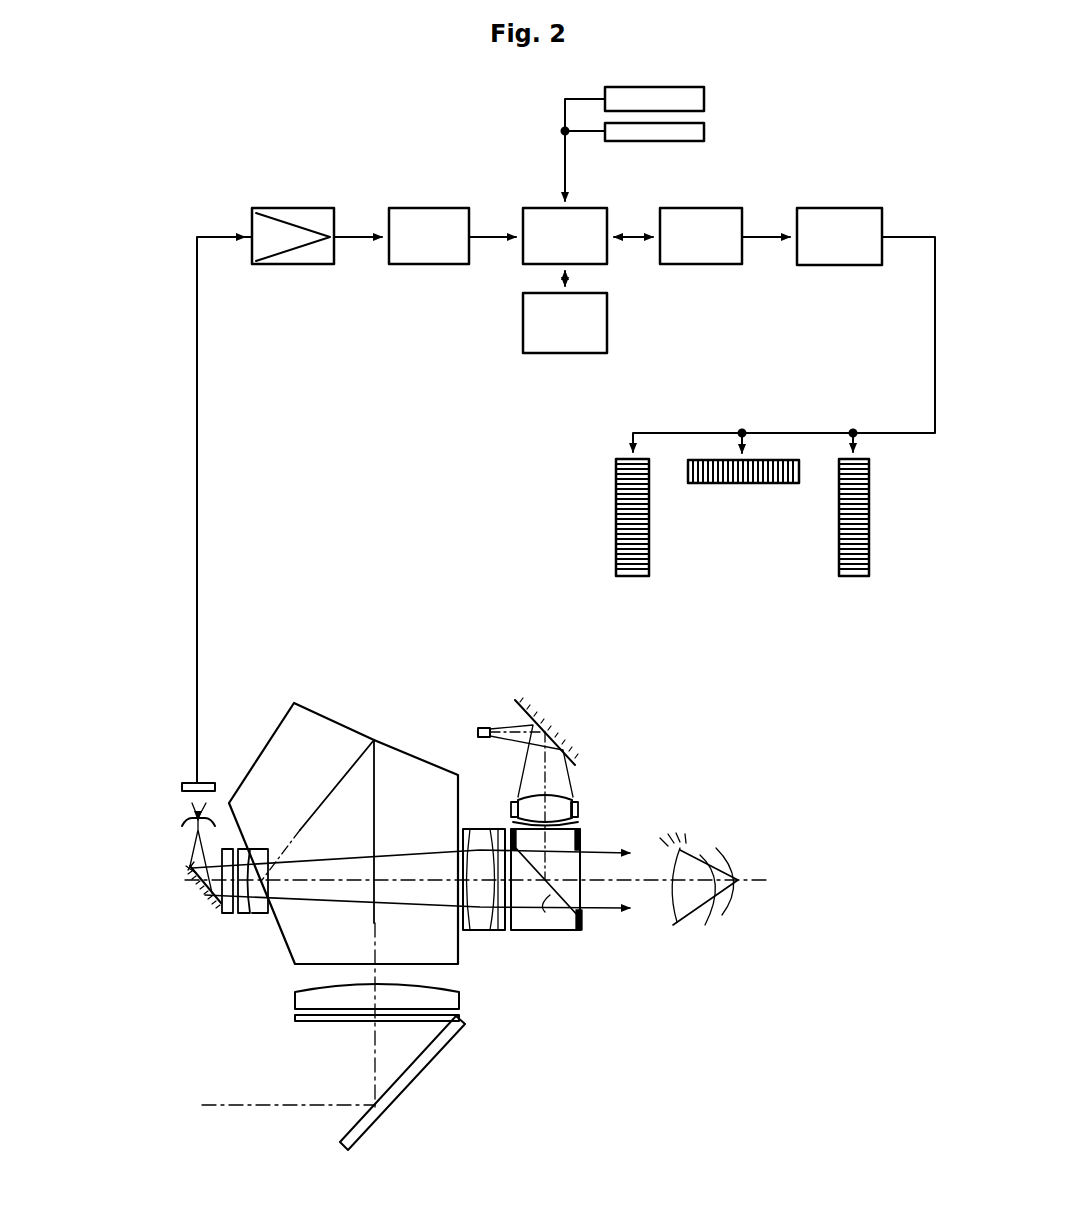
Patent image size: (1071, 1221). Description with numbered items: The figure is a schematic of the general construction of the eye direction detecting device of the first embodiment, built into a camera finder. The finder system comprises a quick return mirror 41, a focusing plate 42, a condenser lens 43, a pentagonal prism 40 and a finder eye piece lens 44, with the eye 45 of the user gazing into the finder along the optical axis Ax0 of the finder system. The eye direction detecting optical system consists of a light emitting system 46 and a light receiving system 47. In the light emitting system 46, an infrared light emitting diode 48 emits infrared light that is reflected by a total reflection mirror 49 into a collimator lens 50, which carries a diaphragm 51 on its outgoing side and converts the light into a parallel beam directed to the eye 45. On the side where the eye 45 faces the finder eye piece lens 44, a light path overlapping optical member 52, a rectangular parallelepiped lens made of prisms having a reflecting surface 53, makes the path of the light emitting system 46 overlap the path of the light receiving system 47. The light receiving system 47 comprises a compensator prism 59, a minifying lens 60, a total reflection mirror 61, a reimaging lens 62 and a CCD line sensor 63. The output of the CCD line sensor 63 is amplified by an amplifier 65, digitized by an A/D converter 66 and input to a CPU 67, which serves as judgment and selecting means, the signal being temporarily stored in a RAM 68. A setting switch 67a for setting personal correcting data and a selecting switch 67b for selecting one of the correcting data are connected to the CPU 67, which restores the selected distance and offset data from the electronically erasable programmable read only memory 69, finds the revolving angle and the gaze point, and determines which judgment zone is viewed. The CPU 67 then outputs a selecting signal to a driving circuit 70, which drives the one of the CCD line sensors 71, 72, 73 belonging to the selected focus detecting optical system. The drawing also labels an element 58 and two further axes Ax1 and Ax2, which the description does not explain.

The pentagonal prism 40 is at (345, 727).
The quick return mirror 41 is at (420, 1068).
The focusing plate 42 is at (322, 1022).
The condenser lens 43 is at (293, 1000).
The finder eye piece lens 44 is at (485, 937).
The eye of the user 45 is at (697, 858).
The light emitting system 46 is at (587, 780).
The light receiving system 47 is at (186, 899).
The infrared light emitting diode 48 is at (481, 727).
The total reflection mirror 49 is at (550, 720).
The collimator lens 50 is at (580, 806).
The diaphragm 51 is at (583, 823).
The light path overlapping optical member 52 is at (575, 938).
The reflecting surface 53 is at (550, 900).
The reflecting surface 58 is at (583, 923).
The compensator prism 59 is at (259, 915).
The minifying lens 60 is at (222, 913).
The total reflection mirror 61 is at (190, 869).
The reimaging lens 62 is at (182, 821).
The CCD line sensor 63 is at (182, 787).
The amplifier 65 is at (294, 208).
The A/D converter 66 is at (430, 208).
The CPU 67 is at (536, 208).
The setting switch 67a is at (704, 99).
The selecting switch 67b is at (704, 133).
The RAM 68 is at (700, 208).
The E²PROM 69 is at (565, 353).
The driving circuit 70 is at (845, 208).
The CCD line sensor 71 is at (742, 490).
The CCD line sensor 72 is at (606, 516).
The CCD line sensor 73 is at (835, 528).
The optical axis of the finder system Ax0 is at (665, 888).
The optical axis Ax1 is at (578, 732).
The optical axis Ax2 is at (240, 907).